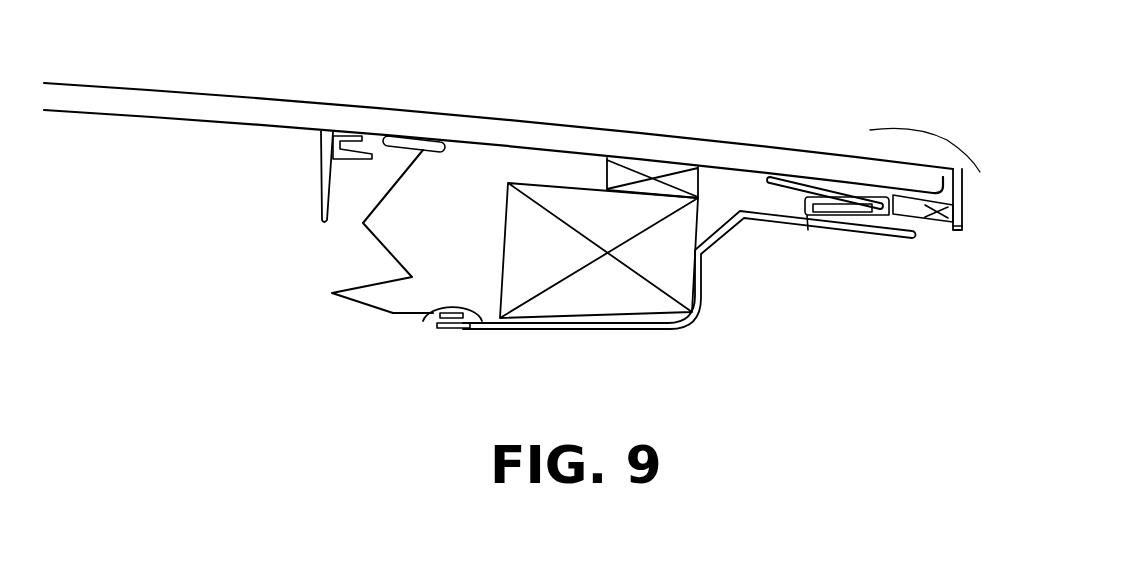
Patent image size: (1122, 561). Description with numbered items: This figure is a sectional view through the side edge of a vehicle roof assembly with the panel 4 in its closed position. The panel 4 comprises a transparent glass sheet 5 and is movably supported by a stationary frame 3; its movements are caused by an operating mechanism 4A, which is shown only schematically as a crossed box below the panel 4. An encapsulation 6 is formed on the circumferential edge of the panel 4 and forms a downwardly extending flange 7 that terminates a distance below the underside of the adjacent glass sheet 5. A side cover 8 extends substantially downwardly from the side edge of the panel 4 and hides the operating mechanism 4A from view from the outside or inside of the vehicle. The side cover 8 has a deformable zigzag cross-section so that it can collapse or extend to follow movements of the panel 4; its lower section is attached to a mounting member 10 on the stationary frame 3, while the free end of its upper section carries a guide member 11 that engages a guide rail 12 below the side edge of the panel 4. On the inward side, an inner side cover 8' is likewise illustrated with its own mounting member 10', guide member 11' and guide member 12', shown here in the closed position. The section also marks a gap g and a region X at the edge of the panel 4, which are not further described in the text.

The frame 3 is at (703, 290).
The panel 4 is at (686, 136).
The operating mechanism 4A is at (567, 173).
The transparent glass sheet 5 is at (475, 130).
The encapsulation 6 is at (957, 172).
The downwardly extending flange 7 is at (962, 215).
The side cover 8 is at (825, 140).
The mounting member 10 is at (847, 262).
The guide member 11 is at (989, 180).
The guide rail 12 is at (956, 274).
The guide member 12' is at (389, 102).
The guide member 11' is at (298, 176).
The inner side cover 8' is at (346, 243).
The mounting member 10' is at (454, 360).
The gap g is at (440, 313).
The detail region X is at (913, 128).